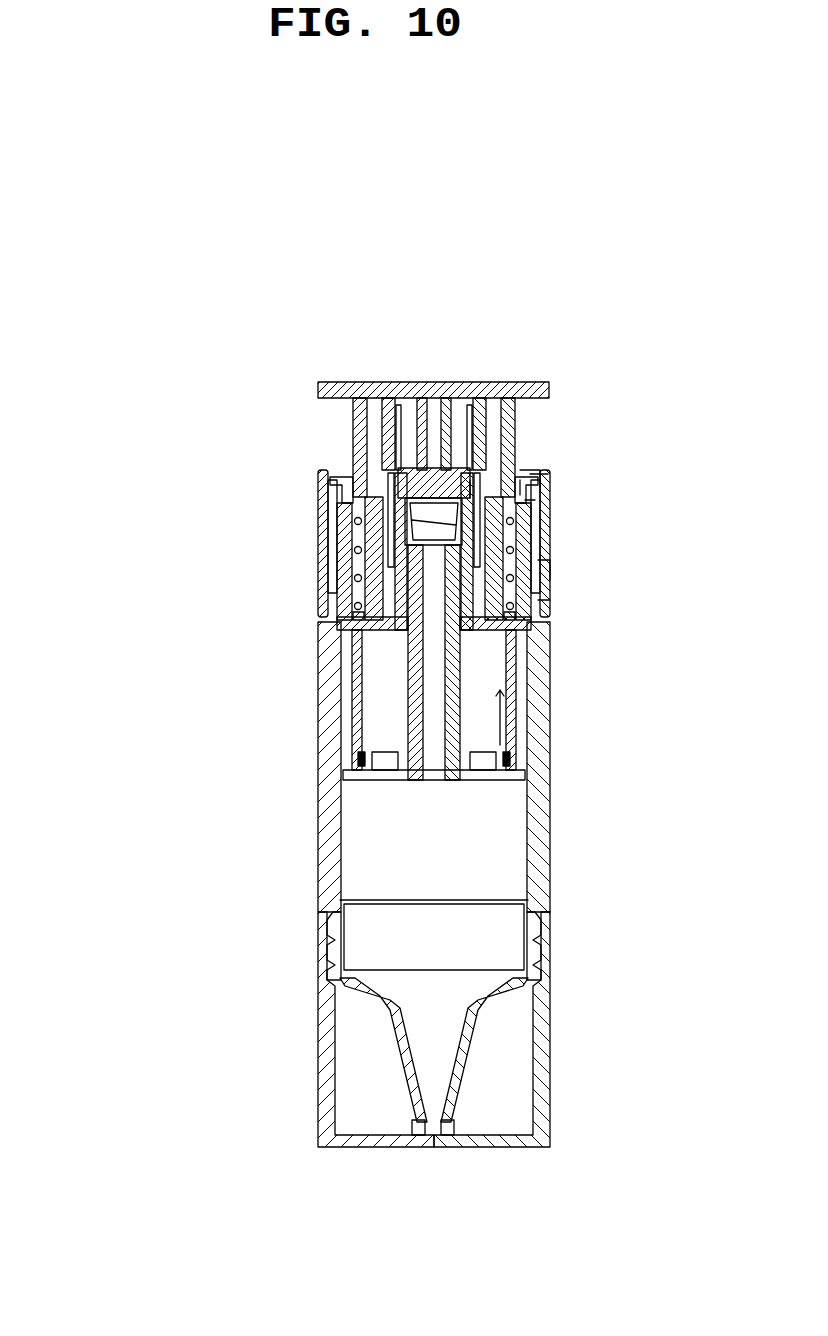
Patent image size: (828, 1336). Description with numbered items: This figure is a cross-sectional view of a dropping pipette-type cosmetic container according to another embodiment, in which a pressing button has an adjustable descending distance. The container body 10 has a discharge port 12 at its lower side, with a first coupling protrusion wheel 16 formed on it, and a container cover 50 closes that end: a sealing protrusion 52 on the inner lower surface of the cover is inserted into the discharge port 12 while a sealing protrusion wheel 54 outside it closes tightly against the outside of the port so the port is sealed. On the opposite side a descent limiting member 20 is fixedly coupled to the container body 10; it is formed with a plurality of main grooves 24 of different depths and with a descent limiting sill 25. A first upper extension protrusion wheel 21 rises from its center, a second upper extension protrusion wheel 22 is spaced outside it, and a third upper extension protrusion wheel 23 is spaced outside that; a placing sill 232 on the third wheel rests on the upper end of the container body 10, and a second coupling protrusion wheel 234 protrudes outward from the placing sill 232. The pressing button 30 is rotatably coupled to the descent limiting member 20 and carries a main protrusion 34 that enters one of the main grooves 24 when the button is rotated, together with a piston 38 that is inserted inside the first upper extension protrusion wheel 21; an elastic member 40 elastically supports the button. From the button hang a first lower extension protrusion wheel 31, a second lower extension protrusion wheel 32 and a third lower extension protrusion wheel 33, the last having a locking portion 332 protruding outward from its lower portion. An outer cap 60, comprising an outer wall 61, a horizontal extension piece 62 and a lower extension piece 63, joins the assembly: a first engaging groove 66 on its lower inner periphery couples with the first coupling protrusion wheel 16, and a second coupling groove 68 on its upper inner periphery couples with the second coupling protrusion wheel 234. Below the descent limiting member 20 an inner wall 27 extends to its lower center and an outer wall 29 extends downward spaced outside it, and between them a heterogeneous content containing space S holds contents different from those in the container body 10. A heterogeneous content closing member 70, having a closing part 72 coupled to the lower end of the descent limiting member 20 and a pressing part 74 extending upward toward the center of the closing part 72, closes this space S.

The container body 10 is at (304, 856).
The discharge port 12 is at (432, 1125).
The first coupling protrusion wheel 16 is at (550, 570).
The descent limiting member 20 is at (320, 600).
The first upper extension protrusion wheel 21 is at (545, 645).
The second upper extension protrusion wheel 22 is at (545, 632).
The third upper extension protrusion wheel 23 is at (545, 615).
The main groove 24 is at (352, 478).
The descent limiting sill 25 is at (540, 470).
The inner wall 27 is at (545, 700).
The outer wall 29 is at (545, 735).
The pressing button 30 is at (377, 368).
The first lower extension protrusion wheel 31 is at (440, 468).
The second lower extension protrusion wheel 32 is at (464, 468).
The third lower extension protrusion wheel 33 is at (470, 468).
The main protrusion 34 is at (360, 470).
The piston 38 is at (343, 618).
The elastic member 40 is at (320, 572).
The container cover 50 is at (304, 1095).
The sealing protrusion 52 is at (440, 1137).
The sealing protrusion wheel 54 is at (425, 1137).
The outer cap 60 is at (137, 405).
The outer wall 61 is at (330, 512).
The horizontal extension piece 62 is at (330, 472).
The lower extension piece 63 is at (330, 497).
The first engaging groove 66 is at (552, 590).
The second coupling groove 68 is at (548, 480).
The heterogeneous content closing member 70 is at (392, 786).
The closing part 72 is at (352, 792).
The pressing part 74 is at (412, 710).
The placing sill 232 is at (548, 505).
The second coupling protrusion wheel 234 is at (548, 470).
The locking portion 332 is at (372, 548).
The heterogeneous content containing space S is at (545, 795).